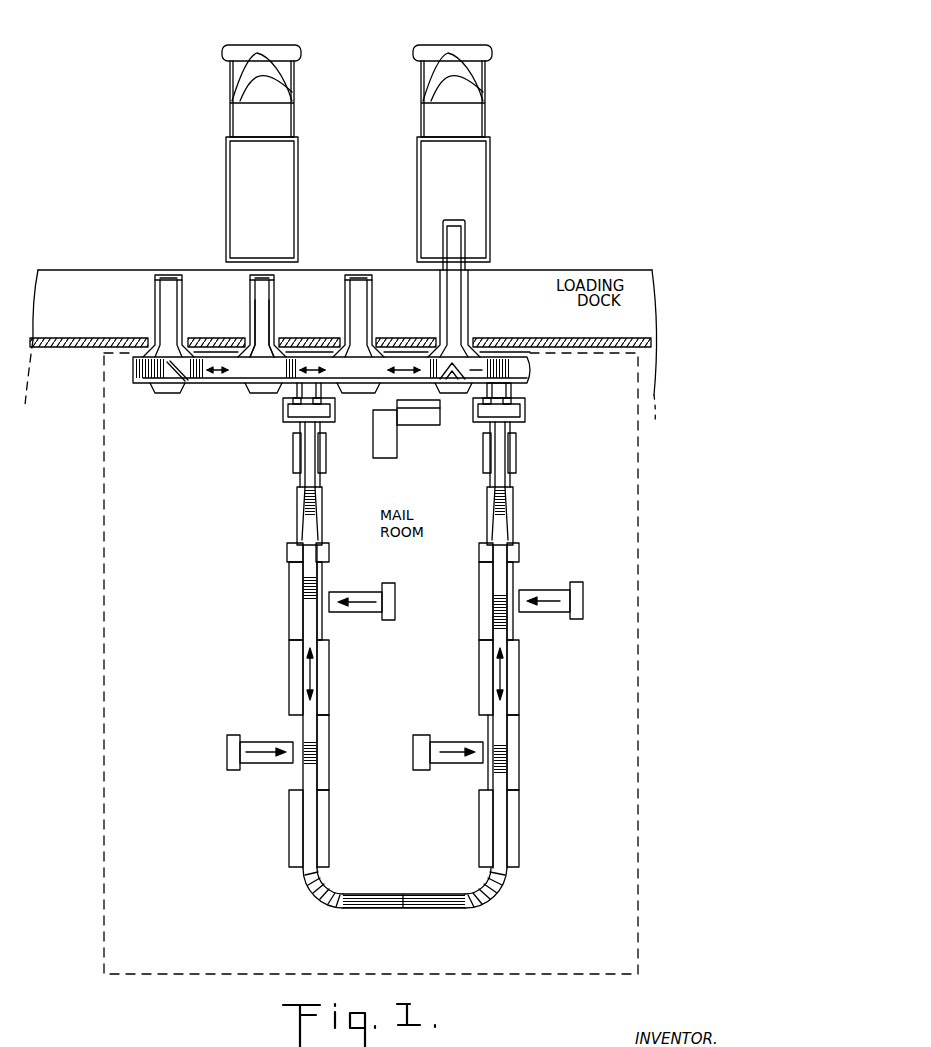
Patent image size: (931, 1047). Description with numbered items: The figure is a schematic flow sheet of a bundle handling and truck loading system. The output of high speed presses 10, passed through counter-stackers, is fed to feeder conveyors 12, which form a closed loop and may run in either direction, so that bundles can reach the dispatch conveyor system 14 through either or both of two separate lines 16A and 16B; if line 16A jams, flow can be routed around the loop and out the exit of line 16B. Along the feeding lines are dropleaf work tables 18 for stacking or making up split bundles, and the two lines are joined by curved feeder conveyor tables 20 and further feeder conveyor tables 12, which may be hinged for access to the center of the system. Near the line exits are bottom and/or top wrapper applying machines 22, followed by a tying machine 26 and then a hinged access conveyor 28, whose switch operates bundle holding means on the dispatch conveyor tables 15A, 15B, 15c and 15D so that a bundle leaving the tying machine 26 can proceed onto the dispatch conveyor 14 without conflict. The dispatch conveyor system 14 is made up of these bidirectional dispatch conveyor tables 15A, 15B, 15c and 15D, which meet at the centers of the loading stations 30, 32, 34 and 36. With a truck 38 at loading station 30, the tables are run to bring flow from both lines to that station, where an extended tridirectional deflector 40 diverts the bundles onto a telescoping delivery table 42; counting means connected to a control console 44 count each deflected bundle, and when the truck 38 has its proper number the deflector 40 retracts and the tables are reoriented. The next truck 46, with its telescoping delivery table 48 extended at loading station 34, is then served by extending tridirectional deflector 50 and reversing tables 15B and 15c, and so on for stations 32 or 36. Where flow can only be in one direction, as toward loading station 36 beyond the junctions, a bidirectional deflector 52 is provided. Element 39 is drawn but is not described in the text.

The high speed press 10 is at (396, 599).
The feeder conveyor 12 is at (302, 728).
The dispatch conveyor system 14 is at (222, 386).
The dispatch conveyor table 15A is at (519, 362).
The dispatch conveyor table 15B is at (405, 362).
The dispatch conveyor table 15c is at (313, 362).
The dispatch conveyor table 15D is at (216, 362).
The feeding line 16A is at (530, 451).
The feeding line 16B is at (300, 432).
The dropleaf work table 18 is at (290, 665).
The curved feeder conveyor table 20 is at (312, 897).
The wrapper applying machine 22 is at (293, 465).
The tying machine 26 is at (283, 412).
The hinged access conveyor 28 is at (512, 392).
The loading station 30 is at (450, 375).
The loading station 32 is at (362, 357).
The loading station 34 is at (268, 360).
The loading station 36 is at (166, 360).
The truck 38 is at (472, 186).
The drive roller 39 is at (361, 398).
The tridirectional deflector 40 is at (452, 394).
The telescoping delivery table 42 is at (455, 290).
The control console 44 is at (410, 433).
The truck 46 is at (246, 185).
The telescoping delivery table 48 is at (268, 289).
The tridirectional deflector 50 is at (252, 398).
The bidirectional deflector 52 is at (176, 372).